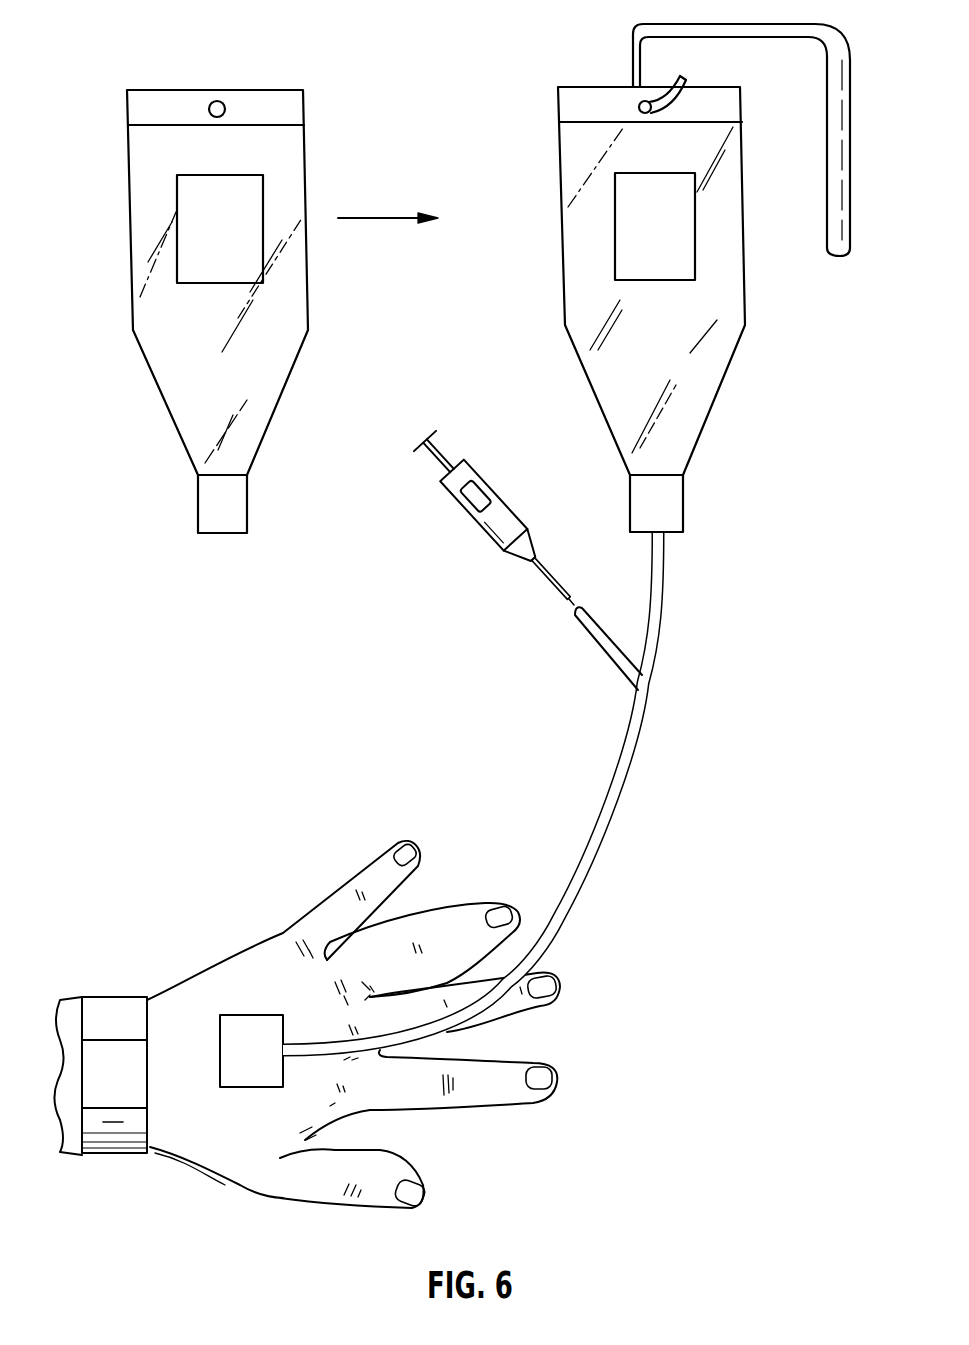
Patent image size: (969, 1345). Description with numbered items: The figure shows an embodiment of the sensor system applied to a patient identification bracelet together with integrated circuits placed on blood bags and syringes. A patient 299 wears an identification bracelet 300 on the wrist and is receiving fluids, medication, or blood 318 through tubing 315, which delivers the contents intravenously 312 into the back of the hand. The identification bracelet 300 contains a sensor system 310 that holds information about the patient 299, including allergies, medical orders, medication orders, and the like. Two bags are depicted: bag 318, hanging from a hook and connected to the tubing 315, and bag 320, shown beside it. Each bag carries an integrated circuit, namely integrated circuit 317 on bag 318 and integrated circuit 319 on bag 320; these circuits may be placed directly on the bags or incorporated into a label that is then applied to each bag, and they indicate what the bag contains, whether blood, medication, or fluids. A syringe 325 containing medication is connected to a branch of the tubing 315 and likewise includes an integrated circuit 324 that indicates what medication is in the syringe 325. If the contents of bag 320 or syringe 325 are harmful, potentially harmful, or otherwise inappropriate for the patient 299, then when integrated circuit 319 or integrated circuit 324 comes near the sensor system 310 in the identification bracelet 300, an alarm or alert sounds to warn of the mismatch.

The patient 299 is at (148, 1003).
The identification bracelet 300 is at (122, 1143).
The sensor system 310 is at (140, 1055).
The intravenous connection 312 is at (249, 1015).
The tubing 315 is at (628, 740).
The integrated circuit 317 is at (623, 202).
The bag 318 is at (667, 278).
The integrated circuit 319 is at (255, 252).
The bag 320 is at (256, 279).
The integrated circuit 324 is at (477, 497).
The syringe 325 is at (482, 512).